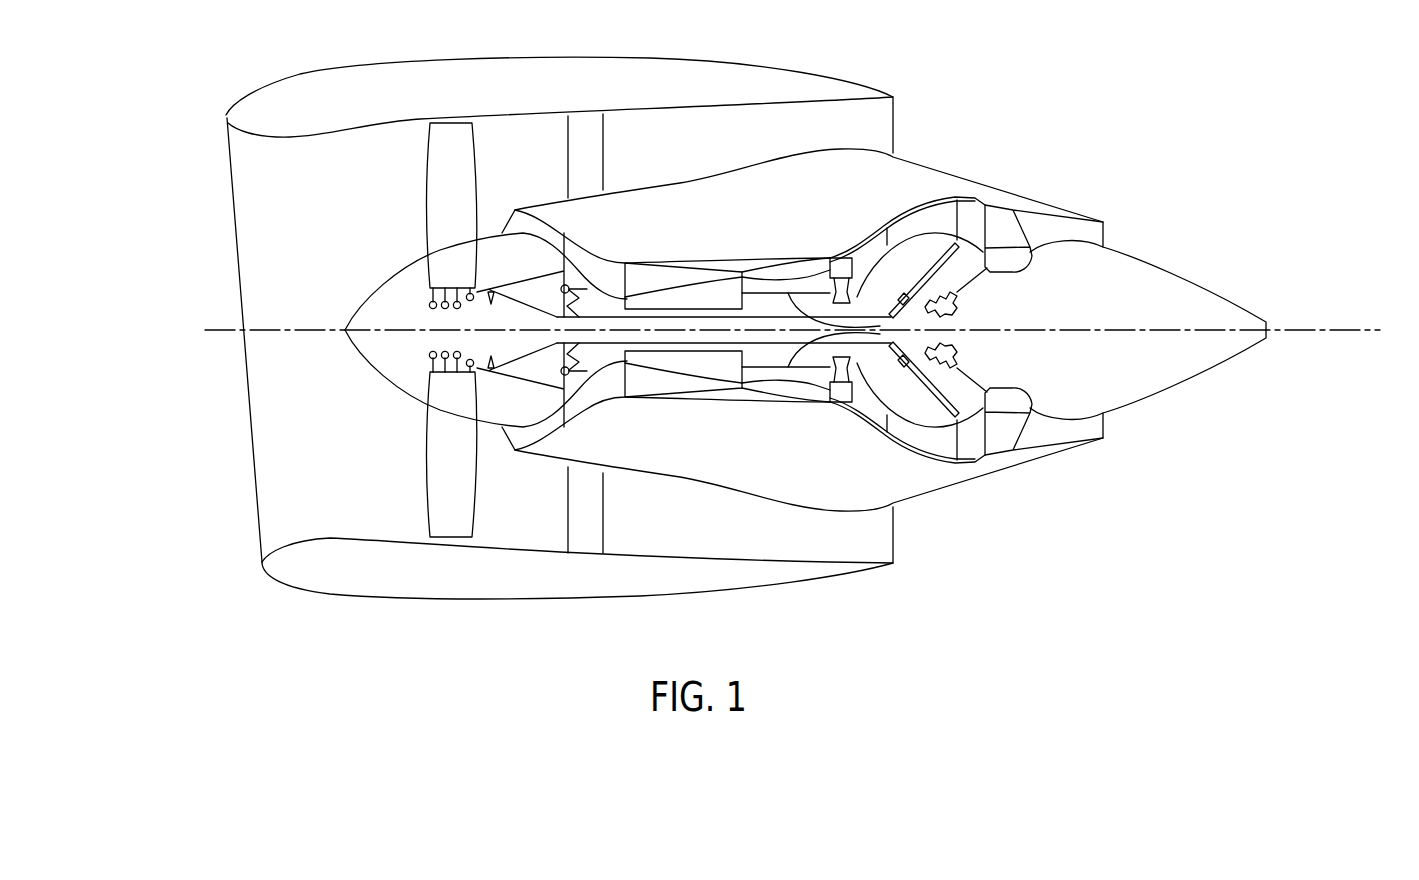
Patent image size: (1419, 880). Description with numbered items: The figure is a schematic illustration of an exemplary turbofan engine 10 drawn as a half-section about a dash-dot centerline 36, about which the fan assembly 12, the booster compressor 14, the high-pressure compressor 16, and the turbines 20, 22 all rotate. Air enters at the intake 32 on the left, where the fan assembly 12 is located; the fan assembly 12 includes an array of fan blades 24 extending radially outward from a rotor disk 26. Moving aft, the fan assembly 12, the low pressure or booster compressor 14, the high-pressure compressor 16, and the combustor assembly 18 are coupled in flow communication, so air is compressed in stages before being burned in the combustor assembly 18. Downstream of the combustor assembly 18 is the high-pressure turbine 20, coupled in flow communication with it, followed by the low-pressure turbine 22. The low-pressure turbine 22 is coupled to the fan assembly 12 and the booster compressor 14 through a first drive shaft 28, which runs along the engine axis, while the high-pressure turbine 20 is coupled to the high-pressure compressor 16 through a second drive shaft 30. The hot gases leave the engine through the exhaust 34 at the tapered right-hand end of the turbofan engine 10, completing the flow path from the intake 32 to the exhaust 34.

The turbofan engine 10 is at (1038, 62).
The fan assembly 12 is at (410, 185).
The booster compressor 14 is at (519, 190).
The high-pressure compressor 16 is at (677, 252).
The combustor assembly 18 is at (793, 248).
The high-pressure turbine 20 is at (848, 234).
The low-pressure turbine 22 is at (932, 190).
The fan blades 24 is at (468, 219).
The rotor disk 26 is at (414, 318).
The first drive shaft 28 is at (608, 317).
The second drive shaft 30 is at (880, 326).
The intake 32 is at (180, 165).
The exhaust 34 is at (1131, 233).
The centerline 36 is at (1316, 330).